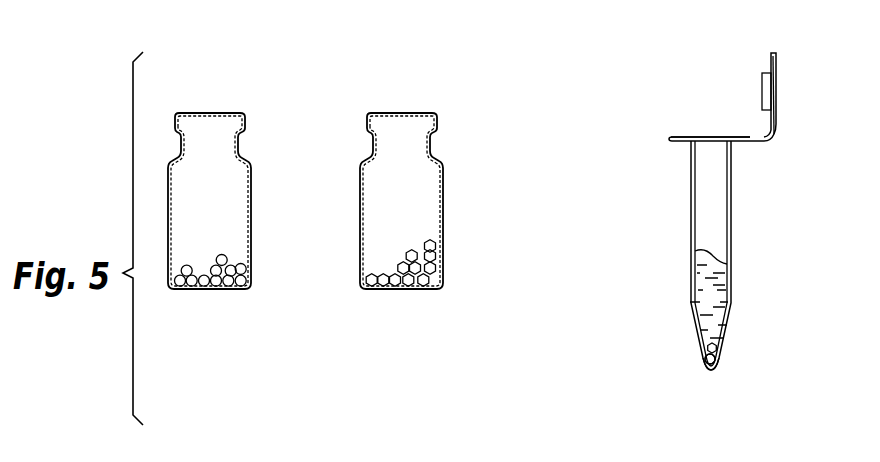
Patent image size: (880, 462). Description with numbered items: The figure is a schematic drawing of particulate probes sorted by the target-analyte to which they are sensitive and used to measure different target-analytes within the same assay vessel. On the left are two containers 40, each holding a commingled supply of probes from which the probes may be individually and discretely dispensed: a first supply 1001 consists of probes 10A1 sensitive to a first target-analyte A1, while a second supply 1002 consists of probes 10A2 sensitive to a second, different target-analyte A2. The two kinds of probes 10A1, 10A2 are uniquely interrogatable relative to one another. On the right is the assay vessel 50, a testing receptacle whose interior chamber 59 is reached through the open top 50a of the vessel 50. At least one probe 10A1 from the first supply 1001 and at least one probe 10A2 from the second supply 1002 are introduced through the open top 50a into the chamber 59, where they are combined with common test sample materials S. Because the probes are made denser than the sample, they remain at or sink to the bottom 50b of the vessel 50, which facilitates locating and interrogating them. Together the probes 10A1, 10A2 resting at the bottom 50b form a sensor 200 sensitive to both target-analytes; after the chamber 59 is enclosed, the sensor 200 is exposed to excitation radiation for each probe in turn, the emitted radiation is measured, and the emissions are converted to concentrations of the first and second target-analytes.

The container 40 is at (252, 166).
The probe sensitive to target-analyte A1 10A1 is at (247, 269).
The probe sensitive to target-analyte A2 10A2 is at (437, 270).
The first supply of probes 1001 is at (226, 300).
The second supply of probes 1002 is at (406, 303).
The assay vessel 50 is at (731, 204).
The open top 50a is at (710, 118).
The bottom 50b is at (708, 372).
The chamber 59 is at (710, 236).
The test sample materials S is at (700, 288).
The sensor 200 is at (726, 357).